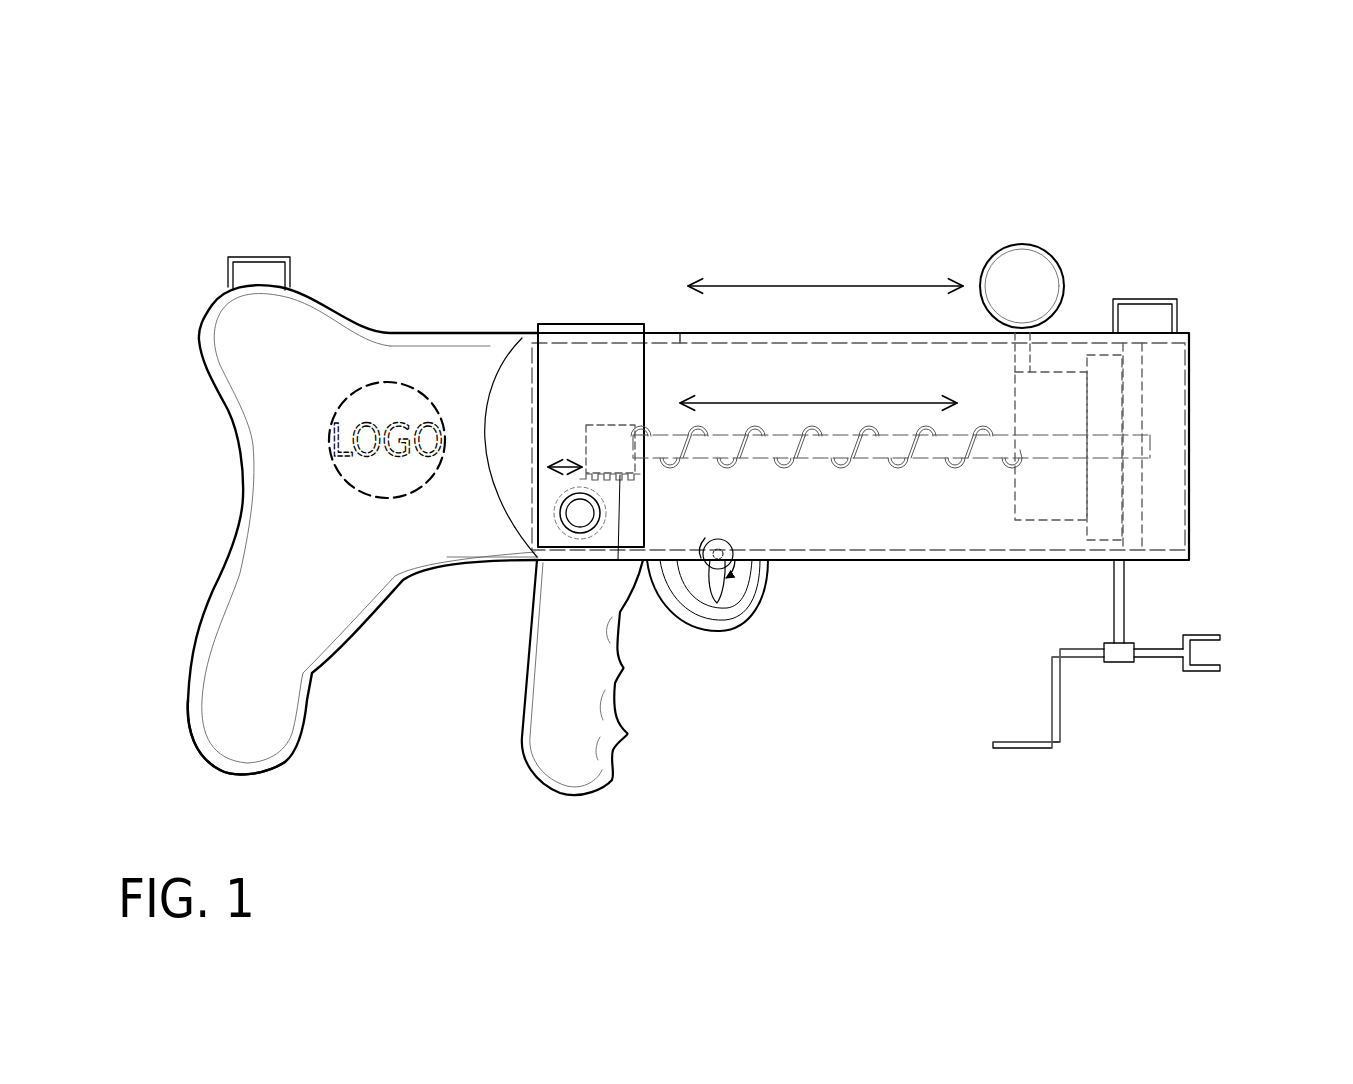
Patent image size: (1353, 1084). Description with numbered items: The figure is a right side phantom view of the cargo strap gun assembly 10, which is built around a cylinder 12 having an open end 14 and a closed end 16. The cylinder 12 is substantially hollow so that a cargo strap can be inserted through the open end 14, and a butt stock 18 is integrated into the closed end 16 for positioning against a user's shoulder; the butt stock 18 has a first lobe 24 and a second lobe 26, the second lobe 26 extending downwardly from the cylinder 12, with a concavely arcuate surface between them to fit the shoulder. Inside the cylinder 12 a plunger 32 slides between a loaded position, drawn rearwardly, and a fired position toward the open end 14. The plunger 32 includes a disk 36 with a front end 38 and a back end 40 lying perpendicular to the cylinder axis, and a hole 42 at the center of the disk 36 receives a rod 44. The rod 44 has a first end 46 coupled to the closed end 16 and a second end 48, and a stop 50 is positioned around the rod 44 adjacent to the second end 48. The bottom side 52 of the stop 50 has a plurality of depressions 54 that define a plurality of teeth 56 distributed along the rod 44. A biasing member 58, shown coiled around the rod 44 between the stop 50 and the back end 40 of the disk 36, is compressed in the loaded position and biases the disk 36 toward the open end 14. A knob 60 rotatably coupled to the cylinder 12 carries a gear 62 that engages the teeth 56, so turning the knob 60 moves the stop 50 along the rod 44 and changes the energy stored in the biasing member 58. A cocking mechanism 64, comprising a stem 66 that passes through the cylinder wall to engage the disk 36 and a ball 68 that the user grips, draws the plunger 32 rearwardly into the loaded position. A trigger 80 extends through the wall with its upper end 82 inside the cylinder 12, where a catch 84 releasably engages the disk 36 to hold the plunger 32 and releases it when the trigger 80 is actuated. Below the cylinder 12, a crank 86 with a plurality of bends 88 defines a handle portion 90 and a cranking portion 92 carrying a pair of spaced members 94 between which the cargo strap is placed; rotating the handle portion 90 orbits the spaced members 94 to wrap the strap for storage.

The cargo strap gun assembly 10 is at (927, 175).
The cylinder 12 is at (832, 333).
The open end 14 is at (1190, 449).
The closed end 16 is at (493, 400).
The butt stock 18 is at (178, 365).
The first lobe 24 is at (206, 308).
The second lobe 26 is at (238, 775).
The plunger 32 is at (958, 482).
The disk 36 is at (1107, 354).
The front end 38 is at (1142, 488).
The back end 40 is at (1017, 495).
The hole 42 is at (1097, 433).
The rod 44 is at (777, 440).
The first end 46 is at (1150, 447).
The second end 48 is at (535, 437).
The stop 50 is at (607, 425).
The bottom side 52 is at (635, 480).
The depressions 54 is at (620, 475).
The teeth 56 is at (592, 480).
The biasing member 58 is at (877, 447).
The knob 60 is at (563, 513).
The gear 62 is at (591, 556).
The cocking mechanism 64 is at (1057, 237).
The stem 66 is at (1013, 362).
The ball 68 is at (1022, 244).
The trigger 80 is at (717, 583).
The upper end 82 is at (733, 555).
The catch 84 is at (718, 540).
The crank 86 is at (1062, 699).
The bends 88 is at (1048, 651).
The handle portion 90 is at (1018, 753).
The cranking portion 92 is at (1156, 667).
The spaced members 94 is at (1207, 633).